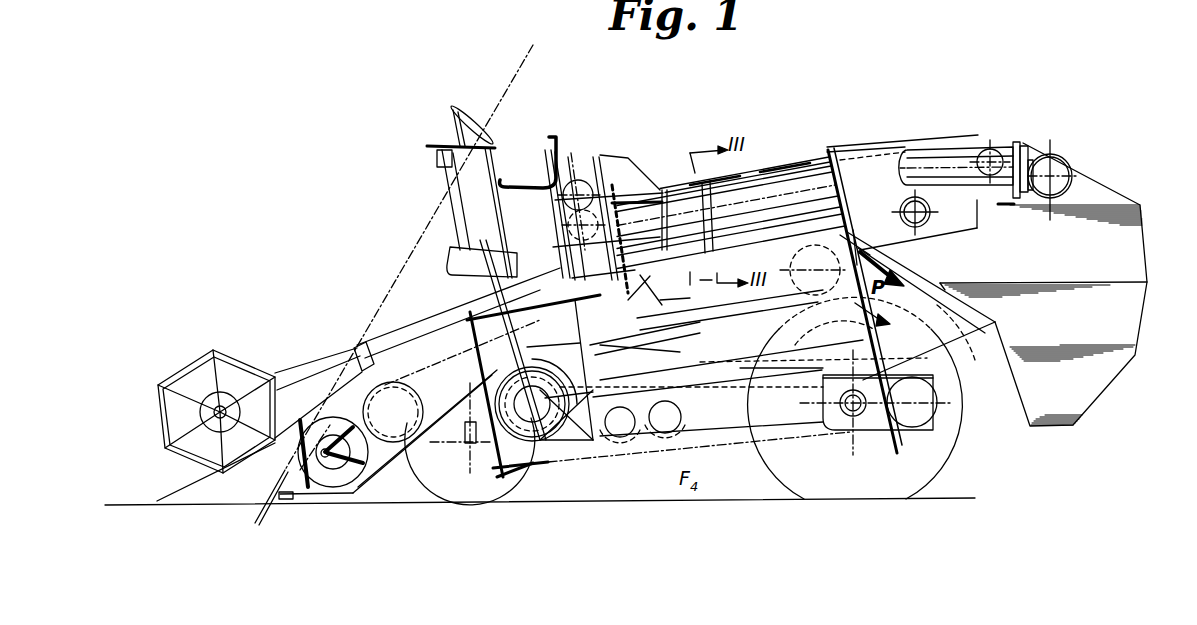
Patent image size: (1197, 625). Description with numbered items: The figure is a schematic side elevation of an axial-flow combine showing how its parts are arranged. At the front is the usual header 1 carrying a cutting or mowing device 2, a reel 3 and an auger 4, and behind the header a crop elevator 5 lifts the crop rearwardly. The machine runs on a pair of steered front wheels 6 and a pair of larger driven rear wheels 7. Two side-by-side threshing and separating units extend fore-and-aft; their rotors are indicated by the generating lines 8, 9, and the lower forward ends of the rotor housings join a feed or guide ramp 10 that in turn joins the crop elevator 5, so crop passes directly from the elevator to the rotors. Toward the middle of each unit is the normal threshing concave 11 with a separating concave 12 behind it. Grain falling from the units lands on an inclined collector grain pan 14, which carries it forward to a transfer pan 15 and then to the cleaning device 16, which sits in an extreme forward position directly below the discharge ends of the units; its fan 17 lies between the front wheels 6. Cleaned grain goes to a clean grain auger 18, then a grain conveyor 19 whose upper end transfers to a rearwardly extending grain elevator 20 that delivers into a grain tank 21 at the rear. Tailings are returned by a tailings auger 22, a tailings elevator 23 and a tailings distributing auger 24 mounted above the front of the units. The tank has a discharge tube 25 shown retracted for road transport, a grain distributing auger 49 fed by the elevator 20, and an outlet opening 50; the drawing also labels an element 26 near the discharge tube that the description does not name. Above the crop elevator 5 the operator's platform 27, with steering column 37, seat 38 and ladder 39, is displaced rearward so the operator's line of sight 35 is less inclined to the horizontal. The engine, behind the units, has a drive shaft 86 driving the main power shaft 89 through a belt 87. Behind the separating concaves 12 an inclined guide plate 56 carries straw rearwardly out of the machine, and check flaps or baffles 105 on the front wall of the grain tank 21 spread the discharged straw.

The header 1 is at (222, 490).
The cutting or mowing device 2 is at (270, 497).
The reel 3 is at (240, 362).
The auger 4 is at (336, 470).
The crop elevator 5 is at (410, 340).
The front wheels 6 is at (418, 495).
The rear wheels 7 is at (925, 490).
The rotor 8 is at (731, 194).
The rotor 9 is at (760, 175).
The feed or guide ramp 10 is at (610, 283).
The threshing concave 11 is at (699, 285).
The separating concave 12 is at (800, 300).
The collector grain pan 14 is at (675, 297).
The transfer pan 15 is at (645, 291).
The cleaning device 16 is at (905, 318).
The fan 17 is at (513, 437).
The clean grain auger 18 is at (618, 440).
The grain conveyor 19 is at (590, 370).
The grain elevator 20 is at (860, 148).
The grain tank 21 is at (1135, 250).
The tailings auger 22 is at (660, 435).
The tailings elevator 23 is at (668, 330).
The tailings distributing auger 24 is at (585, 160).
The discharge tube 25 is at (943, 157).
The auger bearing 26 is at (943, 197).
The operator's platform 27 is at (455, 270).
The line of sight 35 is at (530, 58).
The steering column 37 is at (443, 172).
The operator's seat 38 is at (550, 133).
The ladder 39 is at (500, 280).
The grain distributing auger 49 is at (1010, 150).
The grain tank outlet opening 50 is at (1060, 165).
The inclined guide plate 56 is at (858, 300).
The drive shaft 86 is at (930, 215).
The belt 87 is at (858, 245).
The main power shaft 89 is at (812, 318).
The check flaps or baffles 105 is at (932, 331).